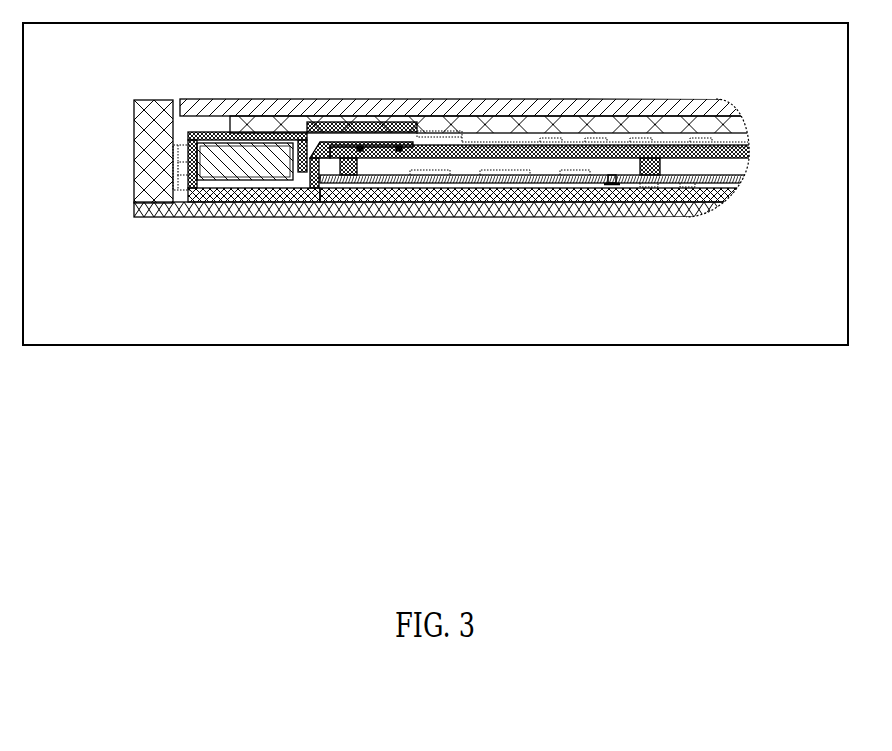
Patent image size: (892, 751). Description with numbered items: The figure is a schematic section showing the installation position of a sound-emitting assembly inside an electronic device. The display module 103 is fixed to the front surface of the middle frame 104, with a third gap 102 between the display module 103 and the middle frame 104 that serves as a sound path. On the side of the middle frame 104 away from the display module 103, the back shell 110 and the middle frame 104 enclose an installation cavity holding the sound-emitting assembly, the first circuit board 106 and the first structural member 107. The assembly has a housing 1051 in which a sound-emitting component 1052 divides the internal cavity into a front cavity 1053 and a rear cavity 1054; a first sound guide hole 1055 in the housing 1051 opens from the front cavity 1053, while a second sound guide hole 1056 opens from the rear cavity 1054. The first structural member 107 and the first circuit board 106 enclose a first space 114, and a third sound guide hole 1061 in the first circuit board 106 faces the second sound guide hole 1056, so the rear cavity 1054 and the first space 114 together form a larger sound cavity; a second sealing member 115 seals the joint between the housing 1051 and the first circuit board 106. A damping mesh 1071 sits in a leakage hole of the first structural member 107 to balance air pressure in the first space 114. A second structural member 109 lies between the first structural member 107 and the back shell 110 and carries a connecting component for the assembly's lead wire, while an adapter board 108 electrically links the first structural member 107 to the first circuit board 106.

The third gap 102 is at (200, 119).
The display module 103 is at (550, 98).
The middle frame 104 is at (690, 102).
The first circuit board 106 is at (750, 153).
The first structural member 107 is at (737, 178).
The adapter board 108 is at (352, 217).
The second structural member 109 is at (636, 206).
The back shell 110 is at (687, 217).
The first space 114 is at (497, 172).
The second sealing member 115 is at (345, 130).
The housing 1051 is at (192, 216).
The sound-emitting component 1052 is at (248, 152).
The front cavity 1053 is at (190, 146).
The rear cavity 1054 is at (263, 218).
The first sound guide hole 1055 is at (218, 147).
The second sound guide hole 1056 is at (384, 142).
The third sound guide hole 1061 is at (383, 153).
The damping mesh 1071 is at (612, 184).